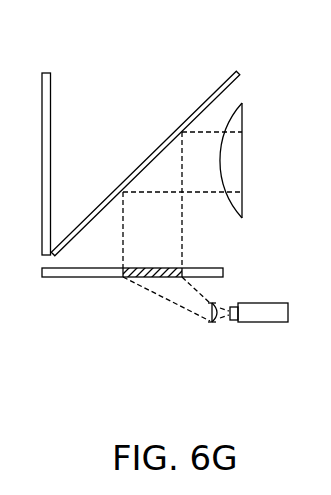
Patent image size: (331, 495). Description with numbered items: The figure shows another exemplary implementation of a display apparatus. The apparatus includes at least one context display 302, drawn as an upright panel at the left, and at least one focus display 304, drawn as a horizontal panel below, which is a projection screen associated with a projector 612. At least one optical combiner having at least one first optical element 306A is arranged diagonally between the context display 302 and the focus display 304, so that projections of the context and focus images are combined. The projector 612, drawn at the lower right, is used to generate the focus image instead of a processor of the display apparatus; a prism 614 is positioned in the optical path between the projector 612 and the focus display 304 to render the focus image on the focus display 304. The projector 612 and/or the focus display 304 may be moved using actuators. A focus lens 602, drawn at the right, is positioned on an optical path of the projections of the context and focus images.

The context display 302 is at (74, 144).
The first optical element 306A is at (145, 141).
The focus lens 602 is at (263, 176).
The focus display 304 is at (119, 296).
The prism 614 is at (207, 341).
The projector 612 is at (264, 341).